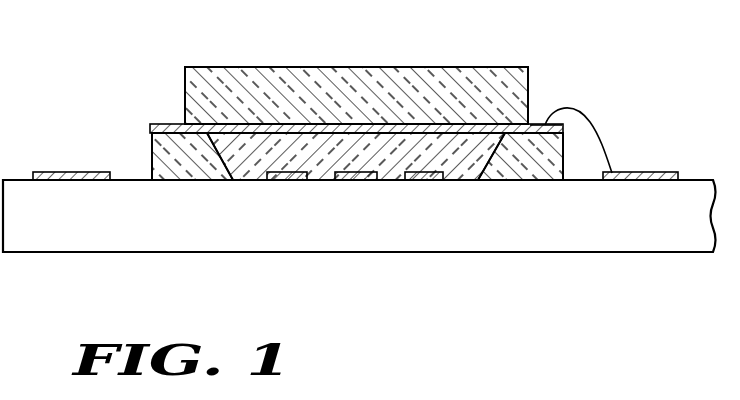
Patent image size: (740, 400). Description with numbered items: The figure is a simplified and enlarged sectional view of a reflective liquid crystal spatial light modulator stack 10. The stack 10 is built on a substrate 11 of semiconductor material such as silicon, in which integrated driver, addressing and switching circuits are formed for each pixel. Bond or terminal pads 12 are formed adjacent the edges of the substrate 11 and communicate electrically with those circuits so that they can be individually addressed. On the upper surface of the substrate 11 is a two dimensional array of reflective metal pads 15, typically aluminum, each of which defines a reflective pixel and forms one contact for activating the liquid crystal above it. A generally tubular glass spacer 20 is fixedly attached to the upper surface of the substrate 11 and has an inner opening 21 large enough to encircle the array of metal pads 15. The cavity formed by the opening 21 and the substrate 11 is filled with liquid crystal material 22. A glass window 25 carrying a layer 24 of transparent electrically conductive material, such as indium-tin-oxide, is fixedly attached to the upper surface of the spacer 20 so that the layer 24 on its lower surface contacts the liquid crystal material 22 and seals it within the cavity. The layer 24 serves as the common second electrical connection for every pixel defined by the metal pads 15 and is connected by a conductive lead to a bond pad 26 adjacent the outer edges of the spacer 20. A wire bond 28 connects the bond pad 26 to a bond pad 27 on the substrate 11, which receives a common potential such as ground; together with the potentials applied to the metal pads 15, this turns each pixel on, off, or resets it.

The reflective liquid crystal spatial light modulator stack 10 is at (363, 337).
The substrate 11 is at (598, 252).
The bond or terminal pads 12 is at (38, 170).
The reflective metal pads 15 is at (288, 182).
The glass spacer 20 is at (200, 182).
The inner opening 21 is at (330, 182).
The liquid crystal material 22 is at (463, 167).
The electrically conductive material layer 24 is at (167, 124).
The glass window 25 is at (247, 67).
The bond pad 26 is at (543, 123).
The bond pad 27 is at (665, 172).
The wire bond 28 is at (598, 132).